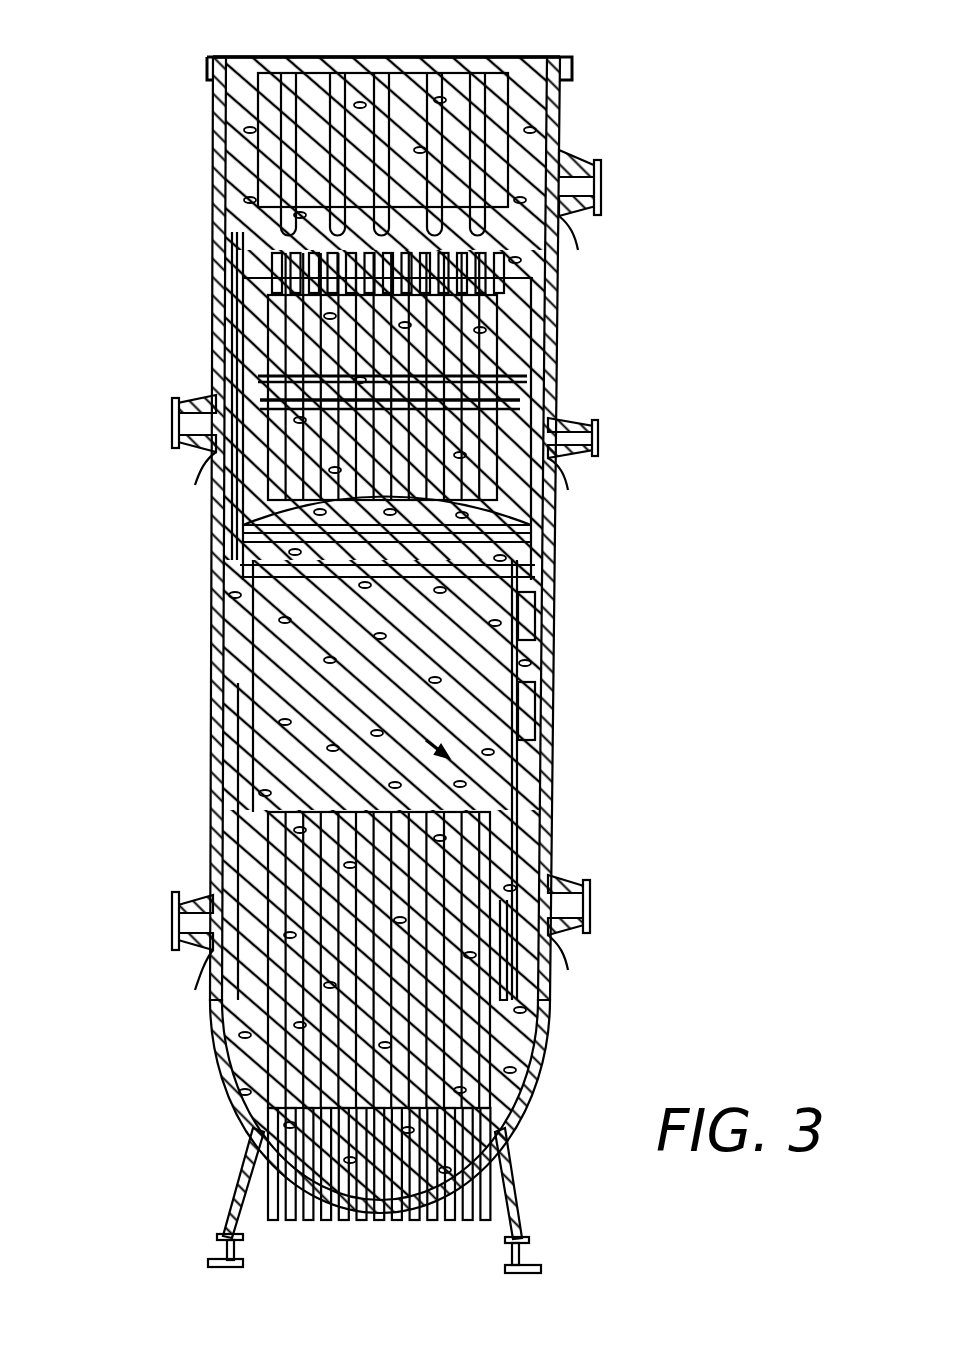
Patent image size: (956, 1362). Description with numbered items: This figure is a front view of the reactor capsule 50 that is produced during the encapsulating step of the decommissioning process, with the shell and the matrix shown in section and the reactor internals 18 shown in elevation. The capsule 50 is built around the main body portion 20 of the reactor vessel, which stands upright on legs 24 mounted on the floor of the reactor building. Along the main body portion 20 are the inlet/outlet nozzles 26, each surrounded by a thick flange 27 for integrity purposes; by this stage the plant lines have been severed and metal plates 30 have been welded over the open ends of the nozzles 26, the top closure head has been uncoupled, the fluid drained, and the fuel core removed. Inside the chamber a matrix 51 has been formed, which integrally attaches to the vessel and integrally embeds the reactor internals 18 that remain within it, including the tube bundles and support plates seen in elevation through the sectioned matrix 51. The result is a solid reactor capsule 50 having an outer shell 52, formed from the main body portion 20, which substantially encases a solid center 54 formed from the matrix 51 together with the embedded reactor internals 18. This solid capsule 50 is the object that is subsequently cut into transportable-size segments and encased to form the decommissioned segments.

The reactor capsule 50 is at (380, 623).
The reactor internals 18 is at (290, 172).
The main body portion 20 is at (556, 340).
The inlet/outlet nozzles 26 is at (560, 165).
The metal plates 30 is at (601, 190).
The thick flanges 27 is at (572, 215).
The matrix 51 is at (435, 650).
The outer shell 52 is at (545, 690).
The solid center 54 is at (445, 750).
The legs 24 is at (248, 1195).